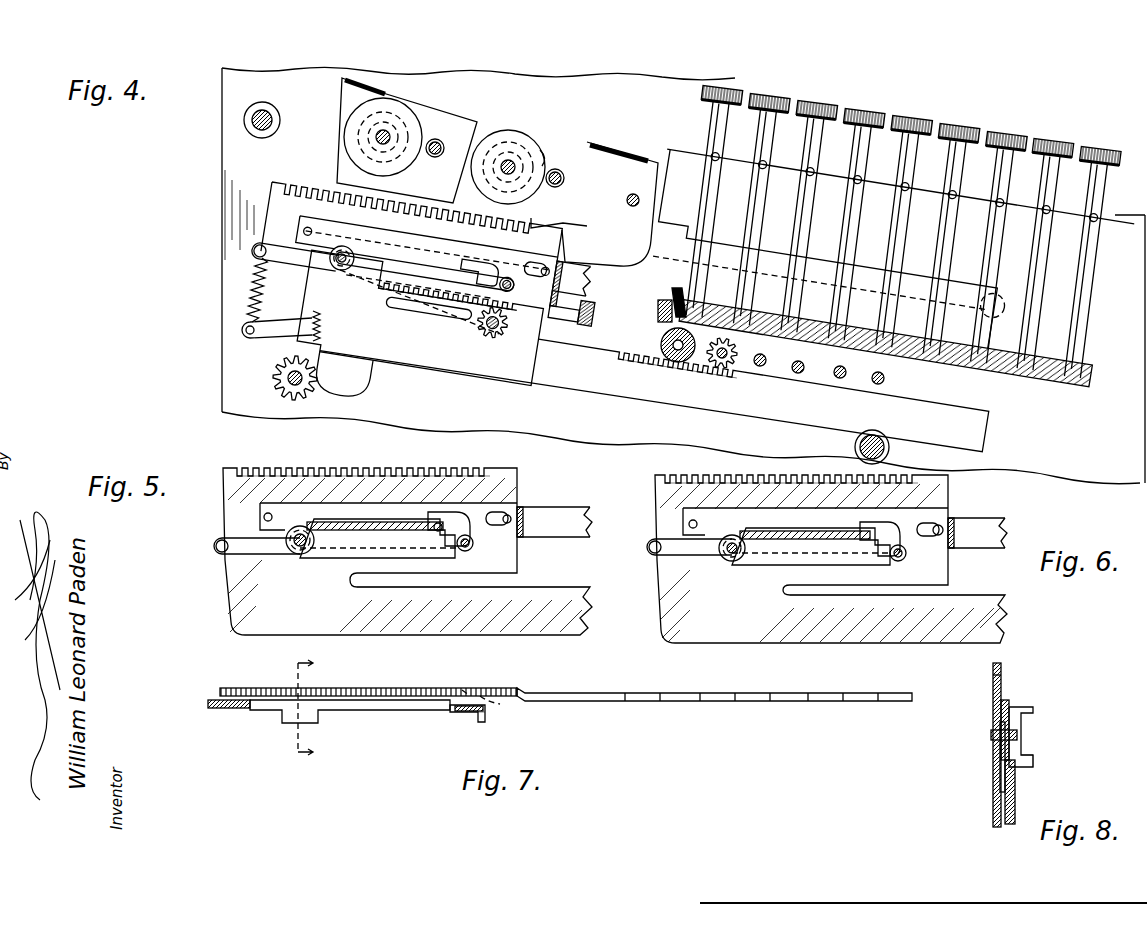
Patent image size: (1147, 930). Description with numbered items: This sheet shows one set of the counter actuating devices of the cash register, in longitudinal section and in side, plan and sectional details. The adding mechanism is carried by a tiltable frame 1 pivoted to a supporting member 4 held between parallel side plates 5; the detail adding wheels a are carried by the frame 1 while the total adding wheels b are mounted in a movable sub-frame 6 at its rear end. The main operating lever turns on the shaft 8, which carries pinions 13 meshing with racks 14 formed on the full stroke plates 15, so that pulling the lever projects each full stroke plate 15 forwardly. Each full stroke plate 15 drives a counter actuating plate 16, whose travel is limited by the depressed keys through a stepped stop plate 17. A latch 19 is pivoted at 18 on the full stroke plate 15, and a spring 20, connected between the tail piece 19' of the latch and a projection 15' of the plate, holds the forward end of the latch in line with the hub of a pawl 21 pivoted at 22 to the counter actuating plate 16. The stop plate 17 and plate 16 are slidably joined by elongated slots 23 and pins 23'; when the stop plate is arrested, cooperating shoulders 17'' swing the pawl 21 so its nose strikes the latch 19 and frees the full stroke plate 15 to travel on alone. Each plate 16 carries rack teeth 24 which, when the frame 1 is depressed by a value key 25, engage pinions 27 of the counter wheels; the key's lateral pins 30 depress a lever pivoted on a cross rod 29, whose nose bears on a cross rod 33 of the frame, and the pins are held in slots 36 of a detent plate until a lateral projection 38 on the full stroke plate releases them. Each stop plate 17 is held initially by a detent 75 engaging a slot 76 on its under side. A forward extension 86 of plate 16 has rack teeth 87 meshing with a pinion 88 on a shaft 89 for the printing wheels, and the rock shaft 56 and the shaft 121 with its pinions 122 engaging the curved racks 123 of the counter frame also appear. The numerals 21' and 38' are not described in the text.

In FIG. 4, the tiltable frame 1 is at (560, 136).
In FIG. 4, the supporting member 4 is at (1092, 396).
In FIG. 4, the side plates 5 is at (1072, 465).
In FIG. 4, the movable sub-frame 6 is at (445, 120).
In FIG. 4, the shaft 8 is at (490, 336).
In FIG. 7, the shaft 8 is at (312, 708).
In FIG. 4, the pinions 13 is at (500, 335).
In FIG. 4, the racks 14 is at (445, 288).
In FIG. 4, the full stroke plate 15 is at (421, 317).
In FIG. 7, the full stroke plate 15 is at (350, 721).
In FIG. 8, the full stroke plate 15 is at (1031, 792).
In FIG. 4, the projection of full-stroke plate 15' is at (277, 320).
In FIG. 4, the counter actuating plate 16 is at (270, 215).
In FIG. 5, the counter actuating plate 16 is at (233, 487).
In FIG. 6, the counter actuating plate 16 is at (665, 490).
In FIG. 7, the counter actuating plate 16 is at (430, 688).
In FIG. 8, the counter actuating plate 16 is at (1001, 690).
In FIG. 4, the stop plate 17 is at (460, 270).
In FIG. 5, the stop plate 17 is at (426, 534).
In FIG. 6, the stop plate 17 is at (858, 528).
In FIG. 7, the stop plate 17 is at (714, 679).
In FIG. 8, the stop plate 17 is at (1033, 723).
In FIG. 5, the cooperating shoulders 17'' is at (561, 481).
In FIG. 4, the pivot 18 is at (341, 262).
In FIG. 5, the pivot 18 is at (296, 546).
In FIG. 6, the pivot 18 is at (732, 548).
In FIG. 8, the pivot 18 is at (992, 738).
In FIG. 4, the latch 19 is at (425, 265).
In FIG. 5, the latch 19 is at (379, 566).
In FIG. 6, the latch 19 is at (809, 564).
In FIG. 8, the latch 19 is at (974, 762).
In FIG. 4, the tail piece of latch 19' is at (249, 267).
In FIG. 5, the tail piece of latch 19' is at (244, 562).
In FIG. 6, the tail piece of latch 19' is at (672, 564).
In FIG. 7, the tail piece of latch 19' is at (230, 715).
In FIG. 4, the spring 20 is at (250, 300).
In FIG. 4, the pawl 21 is at (497, 253).
In FIG. 5, the pawl 21 is at (463, 496).
In FIG. 6, the pawl 21 is at (882, 525).
In FIG. 5, the pawl pin 21' is at (497, 486).
In FIG. 4, the pivot 22 is at (507, 284).
In FIG. 5, the pivot 22 is at (474, 543).
In FIG. 6, the pivot 22 is at (907, 553).
In FIG. 7, the pivot 22 is at (470, 696).
In FIG. 4, the elongated slots 23 is at (575, 256).
In FIG. 5, the elongated slots 23 is at (530, 503).
In FIG. 6, the elongated slots 23 is at (952, 510).
In FIG. 7, the elongated slots 23 is at (515, 710).
In FIG. 4, the pins 23' is at (575, 237).
In FIG. 5, the pins 23' is at (545, 520).
In FIG. 6, the pins 23' is at (985, 513).
In FIG. 5, the rack teeth 24 is at (385, 470).
In FIG. 6, the rack teeth 24 is at (745, 477).
In FIG. 8, the rack teeth 24 is at (1002, 668).
In FIG. 4, the value keys 25 is at (906, 118).
In FIG. 4, the pinions 27 is at (393, 116).
In FIG. 4, the cross rod 29 is at (266, 132).
In FIG. 4, the lateral pins 30 is at (904, 185).
In FIG. 4, the cross rod 33 is at (631, 196).
In FIG. 4, the slots or recesses 36 is at (552, 290).
In FIG. 7, the lateral projection 38 is at (517, 729).
In FIG. 8, the lateral projection 38 is at (1034, 737).
In FIG. 4, the bracket lug 38' is at (573, 316).
In FIG. 7, the bracket lug 38' is at (506, 732).
In FIG. 8, the bracket lug 38' is at (1045, 765).
In FIG. 4, the rock shaft 56 is at (660, 344).
In FIG. 4, the detent 75 is at (662, 312).
In FIG. 4, the slot 76 is at (683, 300).
In FIG. 4, the forward extension 86 is at (575, 378).
In FIG. 5, the forward extension 86 is at (425, 632).
In FIG. 6, the forward extension 86 is at (830, 643).
In FIG. 4, the rack teeth 87 is at (638, 363).
In FIG. 4, the pinion 88 is at (712, 364).
In FIG. 4, the shaft 89 is at (796, 373).
In FIG. 4, the shaft 121 is at (282, 381).
In FIG. 4, the pinions 122 is at (312, 338).
In FIG. 4, the curved racks 123 is at (355, 378).
In FIG. 4, the detail adding wheels a is at (538, 190).
In FIG. 4, the total adding wheels b is at (405, 170).